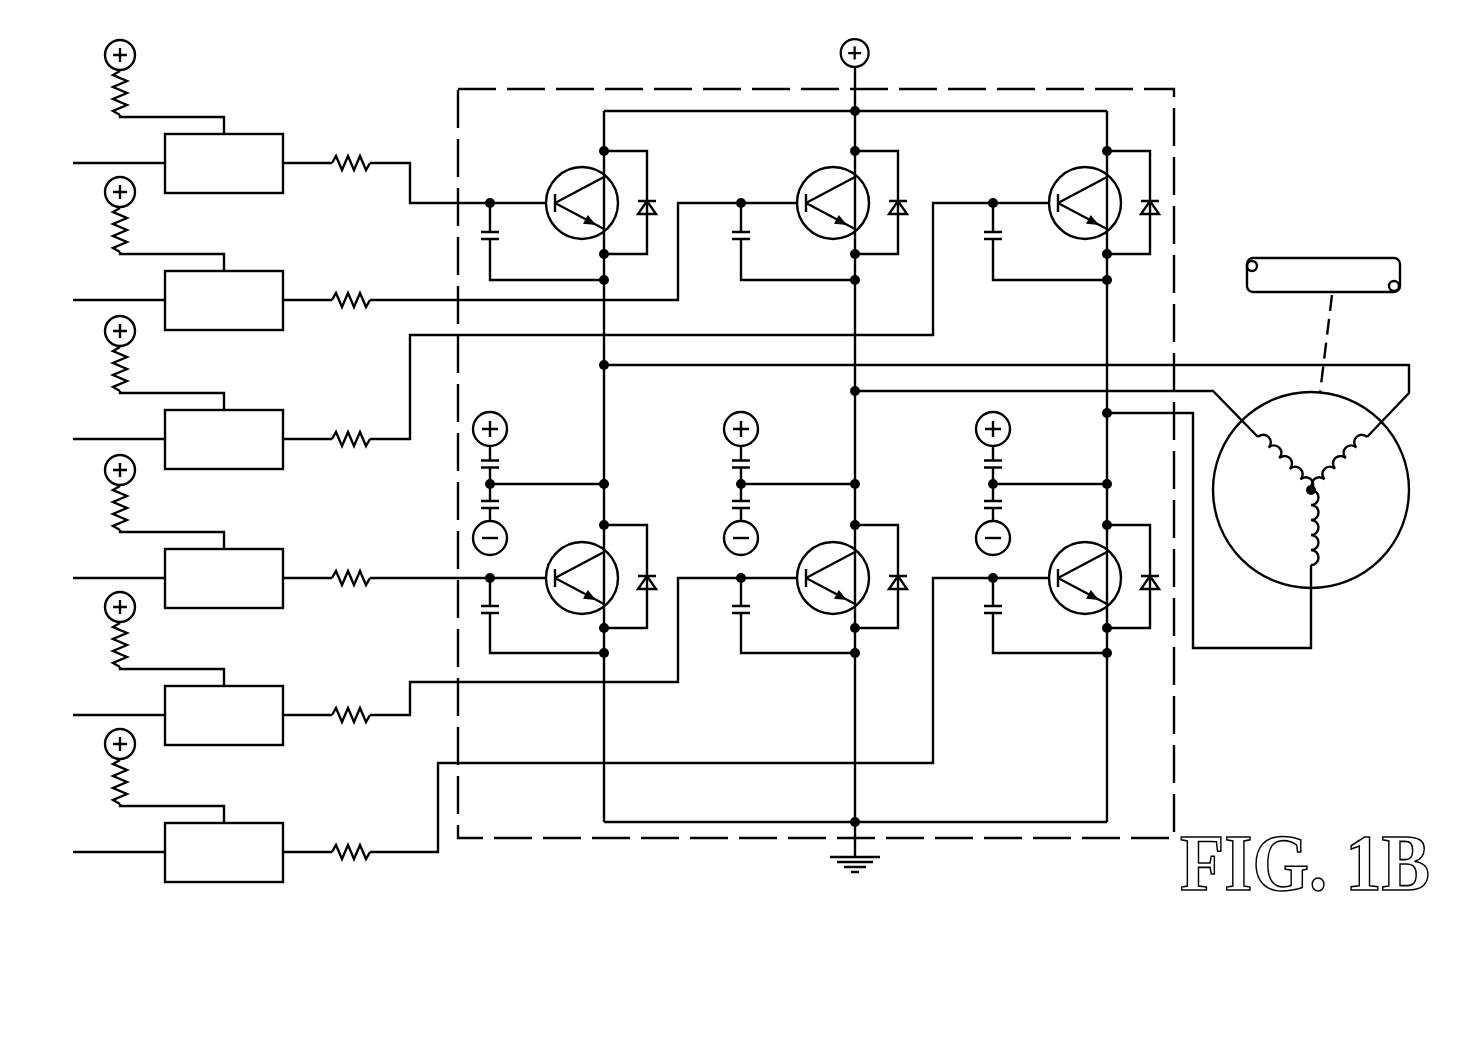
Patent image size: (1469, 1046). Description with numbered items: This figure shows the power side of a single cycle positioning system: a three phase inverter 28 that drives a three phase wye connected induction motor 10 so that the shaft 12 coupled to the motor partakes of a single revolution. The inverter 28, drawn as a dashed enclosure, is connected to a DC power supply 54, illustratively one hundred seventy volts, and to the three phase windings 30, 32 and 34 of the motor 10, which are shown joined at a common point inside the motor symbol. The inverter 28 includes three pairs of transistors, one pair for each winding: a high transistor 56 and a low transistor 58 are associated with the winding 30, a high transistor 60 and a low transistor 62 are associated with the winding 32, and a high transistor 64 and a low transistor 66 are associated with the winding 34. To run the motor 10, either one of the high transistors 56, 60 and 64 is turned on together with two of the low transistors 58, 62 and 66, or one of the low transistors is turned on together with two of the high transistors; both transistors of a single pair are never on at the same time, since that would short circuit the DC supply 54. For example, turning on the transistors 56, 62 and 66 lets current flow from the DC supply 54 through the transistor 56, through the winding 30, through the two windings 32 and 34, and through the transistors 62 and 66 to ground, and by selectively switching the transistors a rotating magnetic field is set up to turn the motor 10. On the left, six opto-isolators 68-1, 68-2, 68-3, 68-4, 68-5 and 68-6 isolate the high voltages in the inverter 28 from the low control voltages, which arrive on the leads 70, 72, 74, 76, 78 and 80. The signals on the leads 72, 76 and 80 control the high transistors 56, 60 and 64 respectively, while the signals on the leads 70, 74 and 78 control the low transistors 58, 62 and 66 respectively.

The three phase wye connected induction motor 10 is at (1355, 580).
The shaft 12 is at (1332, 280).
The three phase inverter 28 is at (1174, 119).
The three phase winding 30 is at (1342, 458).
The three phase winding 32 is at (1262, 445).
The three phase winding 34 is at (1308, 545).
The DC power supply 54 is at (870, 52).
The high transistor 56 is at (563, 172).
The low transistor 58 is at (556, 556).
The high transistor 60 is at (820, 170).
The low transistor 62 is at (802, 557).
The high transistor 64 is at (1072, 170).
The low transistor 66 is at (1053, 557).
The opto-isolator 68-1 is at (273, 134).
The opto-isolator 68-2 is at (277, 273).
The opto-isolator 68-3 is at (278, 411).
The opto-isolator 68-4 is at (283, 555).
The opto-isolator 68-5 is at (283, 695).
The opto-isolator 68-6 is at (280, 830).
The lead 70 is at (90, 578).
The lead 72 is at (90, 163).
The lead 74 is at (90, 715).
The lead 76 is at (90, 300).
The lead 78 is at (90, 852).
The lead 80 is at (90, 439).